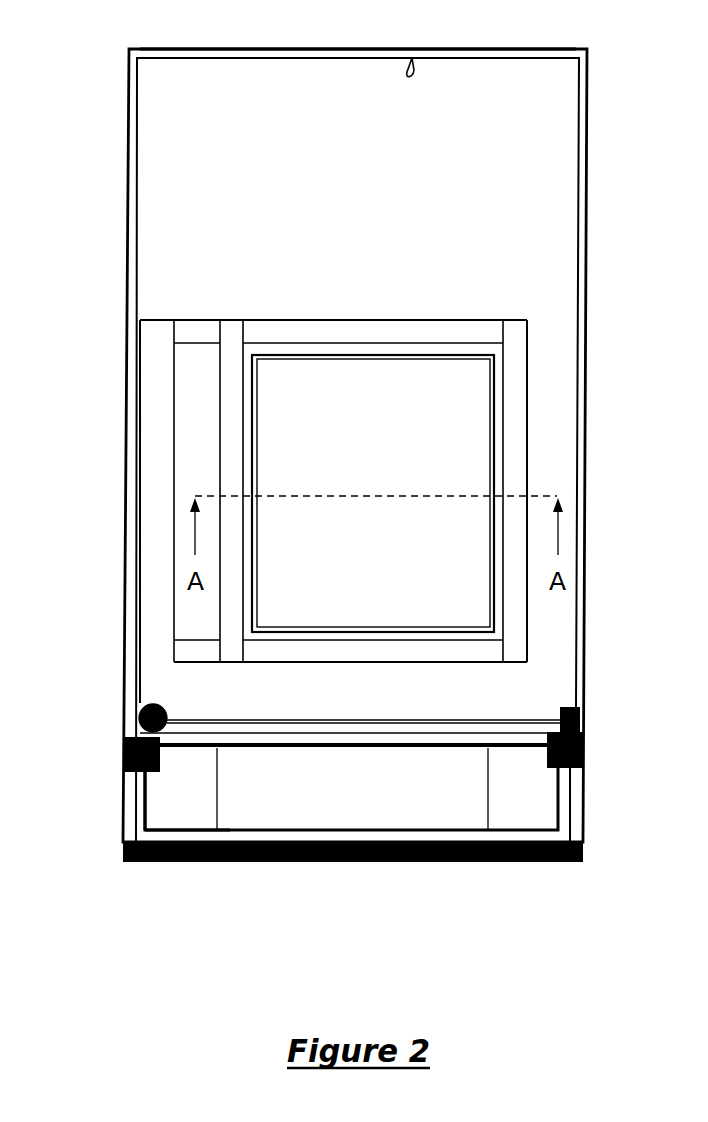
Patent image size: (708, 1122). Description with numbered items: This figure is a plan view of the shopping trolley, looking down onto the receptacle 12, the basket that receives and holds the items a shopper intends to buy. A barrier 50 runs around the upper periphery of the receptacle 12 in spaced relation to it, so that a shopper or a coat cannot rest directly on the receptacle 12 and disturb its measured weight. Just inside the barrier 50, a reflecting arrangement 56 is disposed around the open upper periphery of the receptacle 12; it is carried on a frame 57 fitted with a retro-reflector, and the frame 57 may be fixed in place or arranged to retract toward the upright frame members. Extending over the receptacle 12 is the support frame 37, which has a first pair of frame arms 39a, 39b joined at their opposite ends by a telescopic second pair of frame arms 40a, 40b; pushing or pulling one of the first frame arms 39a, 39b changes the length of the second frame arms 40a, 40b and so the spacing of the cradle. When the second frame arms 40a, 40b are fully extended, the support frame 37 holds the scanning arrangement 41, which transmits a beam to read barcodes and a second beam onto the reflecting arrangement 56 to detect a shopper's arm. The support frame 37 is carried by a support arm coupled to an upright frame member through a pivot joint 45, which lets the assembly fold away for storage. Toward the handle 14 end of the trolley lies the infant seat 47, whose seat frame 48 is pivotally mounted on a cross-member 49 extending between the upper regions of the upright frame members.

The receptacle 12 is at (480, 148).
The handle 14 is at (532, 864).
The support frame 37 is at (398, 479).
The first frame arm 39a is at (518, 416).
The first frame arm 39b is at (228, 433).
The second frame arm 40a is at (305, 328).
The second frame arm 40b is at (313, 653).
The scanning arrangement 41 is at (385, 565).
The pivot joint 45 is at (139, 716).
The seat 47 is at (375, 806).
The seat frame 48 is at (165, 832).
The cross-member 49 is at (262, 748).
The barrier 50 is at (590, 60).
The reflecting arrangement 56 is at (290, 62).
The frame 57 is at (410, 58).